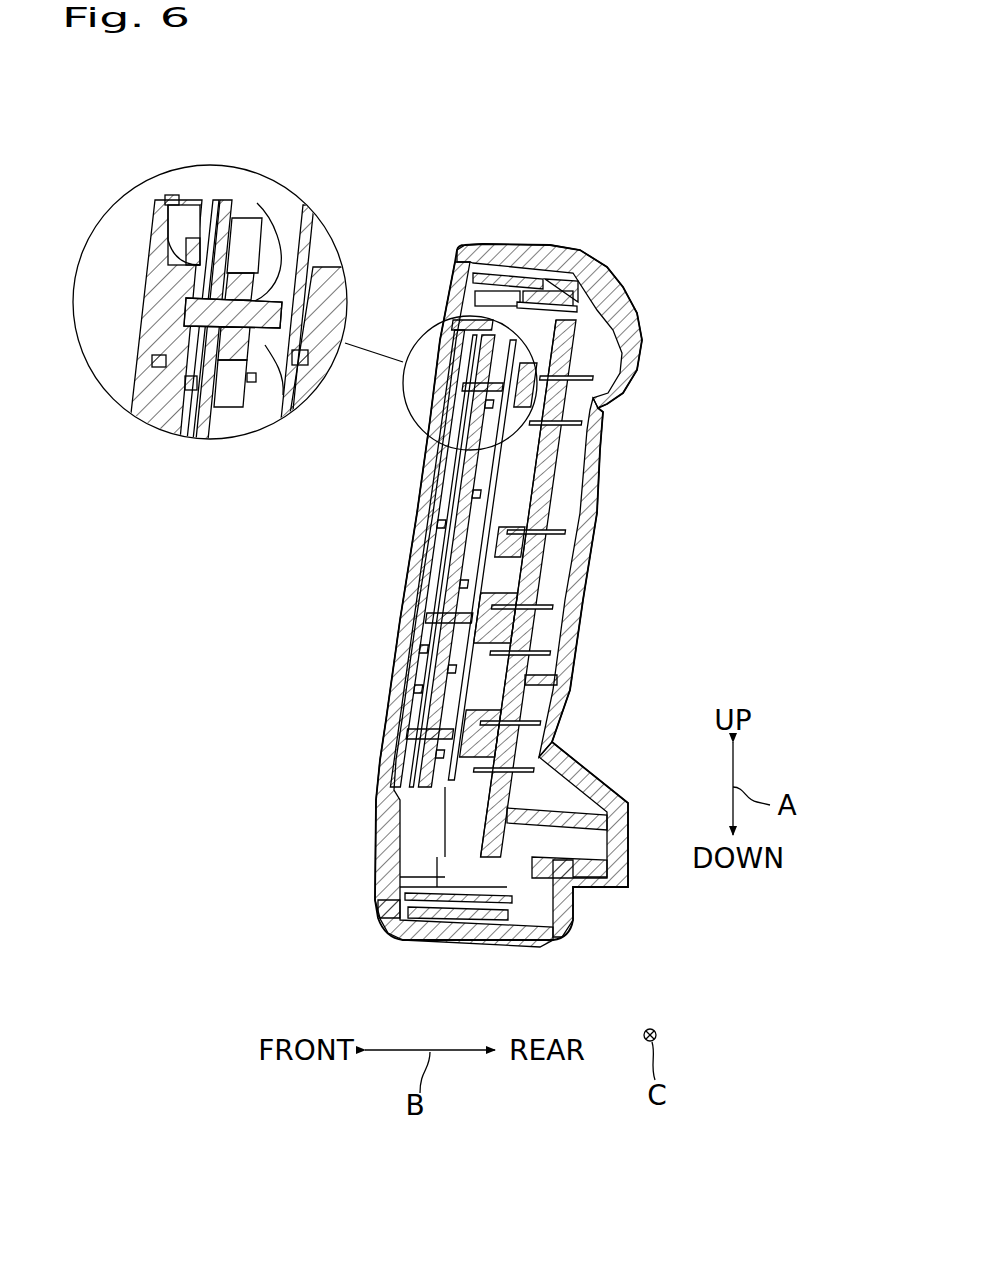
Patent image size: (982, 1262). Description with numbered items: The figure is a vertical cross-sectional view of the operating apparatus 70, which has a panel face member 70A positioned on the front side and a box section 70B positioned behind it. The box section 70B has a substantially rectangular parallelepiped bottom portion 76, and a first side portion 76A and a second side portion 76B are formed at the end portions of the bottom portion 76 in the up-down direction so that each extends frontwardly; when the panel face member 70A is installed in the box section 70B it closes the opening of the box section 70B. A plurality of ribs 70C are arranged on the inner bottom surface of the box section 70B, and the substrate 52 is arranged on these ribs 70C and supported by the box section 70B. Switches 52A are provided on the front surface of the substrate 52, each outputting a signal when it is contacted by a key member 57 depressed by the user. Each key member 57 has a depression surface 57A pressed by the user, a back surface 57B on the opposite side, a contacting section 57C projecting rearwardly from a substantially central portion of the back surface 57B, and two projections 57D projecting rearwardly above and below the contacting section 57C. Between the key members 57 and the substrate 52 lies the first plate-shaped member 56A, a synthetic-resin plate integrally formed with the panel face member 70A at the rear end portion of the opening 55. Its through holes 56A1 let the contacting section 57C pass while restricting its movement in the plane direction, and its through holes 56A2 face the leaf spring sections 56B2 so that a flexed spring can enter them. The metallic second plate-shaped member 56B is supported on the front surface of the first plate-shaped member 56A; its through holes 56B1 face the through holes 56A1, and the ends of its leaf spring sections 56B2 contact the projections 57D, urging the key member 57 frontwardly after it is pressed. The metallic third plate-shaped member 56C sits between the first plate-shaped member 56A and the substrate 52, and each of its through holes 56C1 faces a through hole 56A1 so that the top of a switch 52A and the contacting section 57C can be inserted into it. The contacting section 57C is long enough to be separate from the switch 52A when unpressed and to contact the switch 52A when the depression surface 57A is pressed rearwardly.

The operating apparatus 70 is at (686, 240).
The panel face member 70A is at (457, 267).
The box section 70B is at (547, 240).
The ribs 70C is at (543, 677).
The bottom portion 76 is at (600, 447).
The first side portion 76A is at (520, 247).
The second side portion 76B is at (477, 933).
The substrate 52 is at (537, 558).
The switch 52A is at (553, 518).
The opening 55 is at (211, 208).
The first plate-shaped member 56A is at (410, 672).
The through hole (first through portion) 56A1 is at (283, 223).
The through hole (fourth through portion) 56A2 is at (237, 398).
The second plate-shaped member 56B is at (442, 553).
The through hole (second through portion) 56B1 is at (201, 273).
The leaf spring section 56B2 is at (194, 387).
The third plate-shaped member 56C is at (450, 644).
The through hole (third through portion) 56C1 is at (305, 355).
The key member 57 is at (396, 606).
The depression surface 57A is at (147, 232).
The back surface 57B is at (179, 248).
The contacting section 57C is at (280, 395).
The projection 57D is at (168, 198).